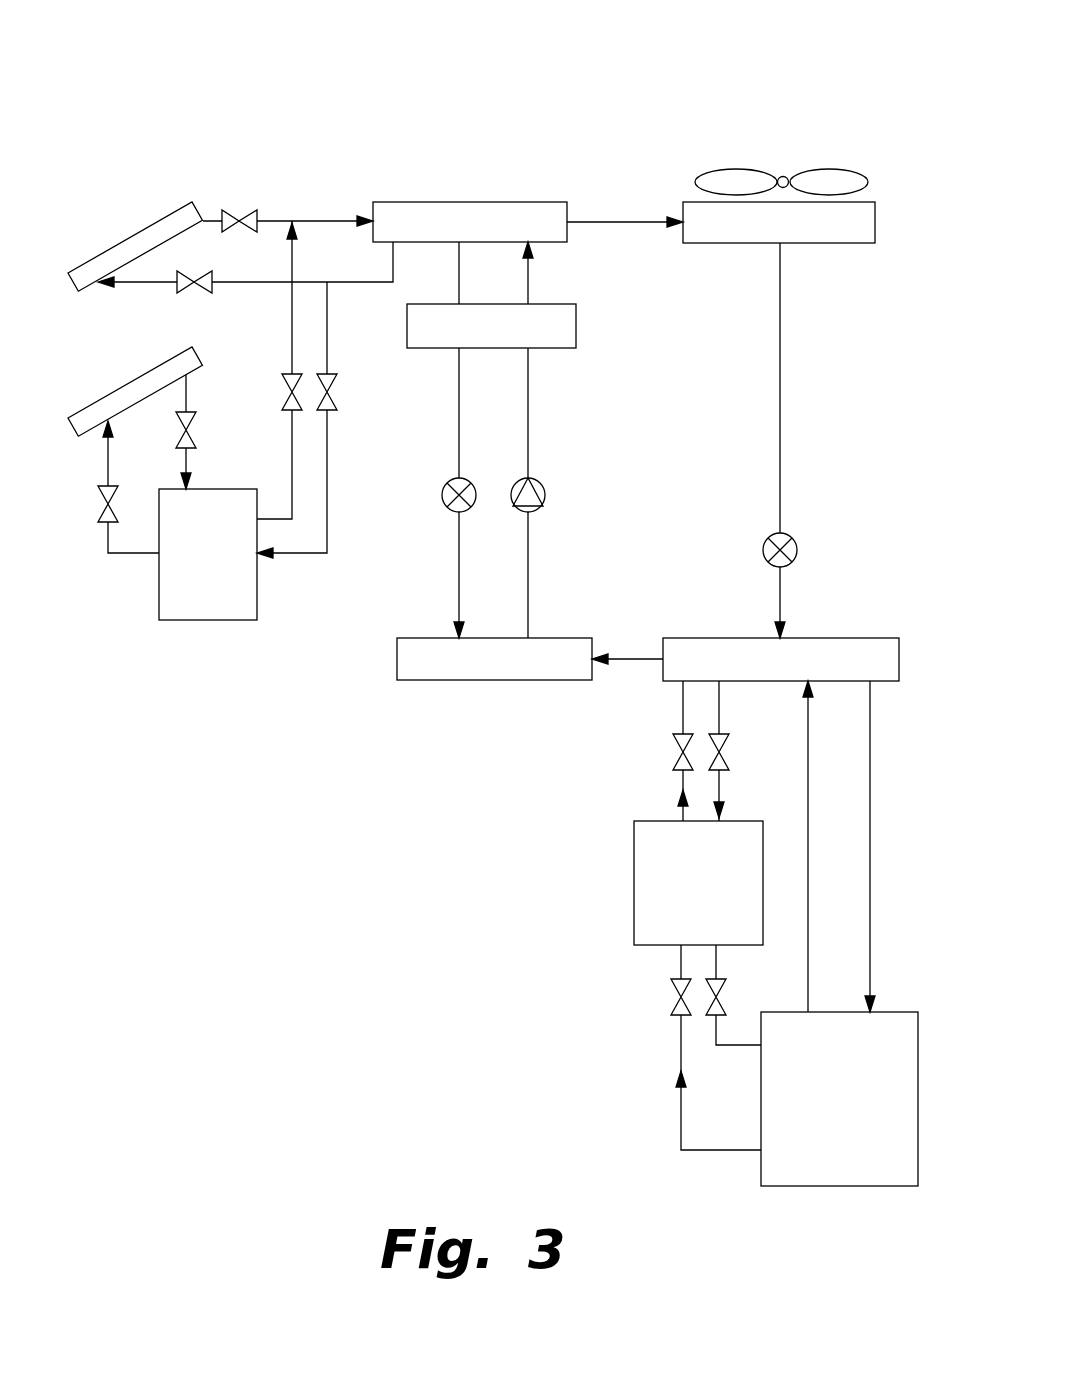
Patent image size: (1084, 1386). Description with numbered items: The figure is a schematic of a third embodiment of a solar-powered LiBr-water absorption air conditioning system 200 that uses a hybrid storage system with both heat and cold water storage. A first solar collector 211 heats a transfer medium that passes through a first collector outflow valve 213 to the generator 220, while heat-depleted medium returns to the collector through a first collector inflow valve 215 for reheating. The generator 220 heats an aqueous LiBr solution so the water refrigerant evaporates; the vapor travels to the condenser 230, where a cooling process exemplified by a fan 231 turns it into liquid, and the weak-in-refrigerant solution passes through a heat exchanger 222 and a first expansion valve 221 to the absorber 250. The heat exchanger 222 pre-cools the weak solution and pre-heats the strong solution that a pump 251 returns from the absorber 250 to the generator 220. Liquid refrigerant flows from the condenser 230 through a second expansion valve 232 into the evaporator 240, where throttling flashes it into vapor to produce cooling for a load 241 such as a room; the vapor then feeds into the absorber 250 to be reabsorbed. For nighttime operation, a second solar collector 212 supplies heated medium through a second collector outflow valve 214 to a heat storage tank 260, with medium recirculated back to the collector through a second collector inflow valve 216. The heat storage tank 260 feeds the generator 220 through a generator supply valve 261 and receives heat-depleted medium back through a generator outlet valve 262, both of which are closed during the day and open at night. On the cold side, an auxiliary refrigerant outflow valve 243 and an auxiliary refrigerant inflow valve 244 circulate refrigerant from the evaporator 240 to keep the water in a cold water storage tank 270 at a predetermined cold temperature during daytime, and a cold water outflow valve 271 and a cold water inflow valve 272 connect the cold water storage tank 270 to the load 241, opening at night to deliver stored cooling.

The solar-powered LiBr-water absorption air conditioning system 200 is at (412, 91).
The first solar collector 211 is at (140, 230).
The second solar collector 212 is at (165, 362).
The first collector outflow valve 213 is at (247, 211).
The second collector outflow valve 214 is at (197, 423).
The first collector inflow valve 215 is at (180, 292).
The second collector inflow valve 216 is at (100, 508).
The generator 220 is at (465, 201).
The first expansion valve 221 is at (441, 491).
The heat exchanger 222 is at (576, 325).
The condenser 230 is at (845, 244).
The fan 231 is at (823, 167).
The second expansion valve 232 is at (798, 547).
The evaporator 240 is at (845, 637).
The load 241 is at (758, 1163).
The auxiliary refrigerant outflow valve 243 is at (730, 750).
The auxiliary refrigerant inflow valve 244 is at (675, 733).
The absorber 250 is at (402, 682).
The pump 251 is at (543, 485).
The heat storage tank 260 is at (197, 621).
The generator supply valve 261 is at (285, 377).
The generator outlet valve 262 is at (337, 383).
The cold water storage tank 270 is at (634, 882).
The cold water outflow valve 271 is at (724, 997).
The cold water inflow valve 272 is at (670, 1000).